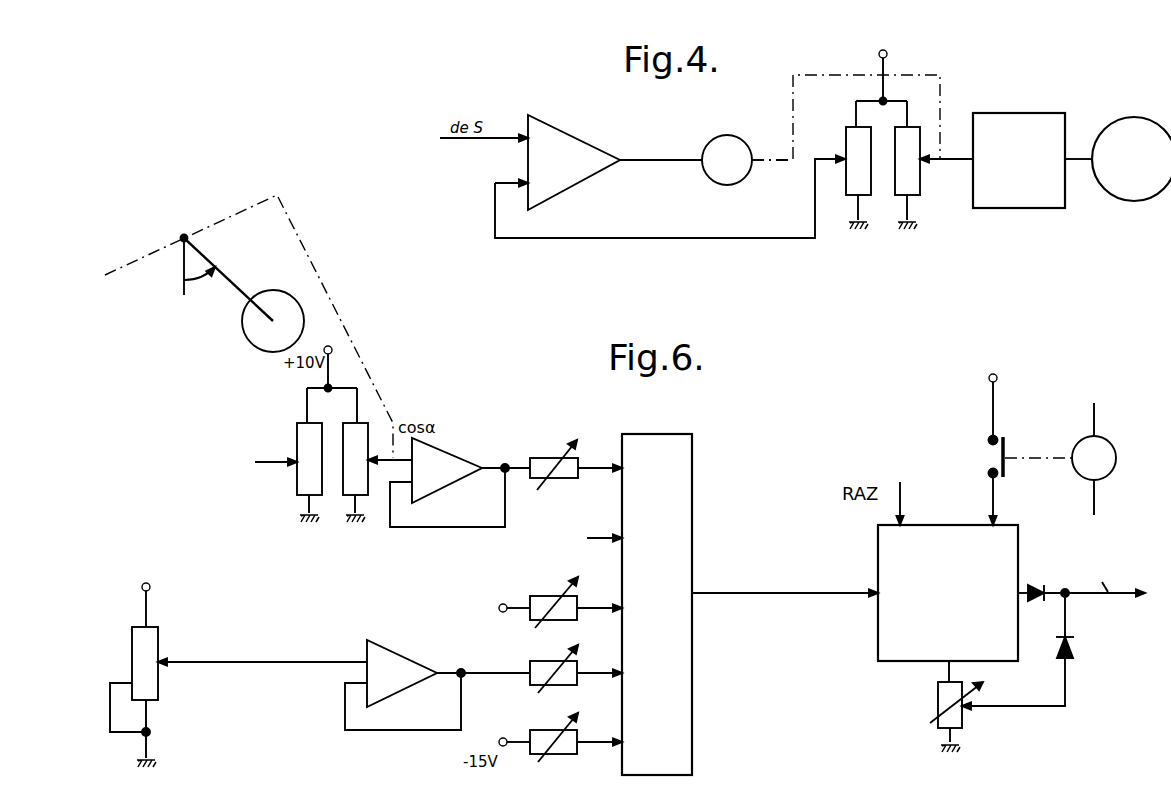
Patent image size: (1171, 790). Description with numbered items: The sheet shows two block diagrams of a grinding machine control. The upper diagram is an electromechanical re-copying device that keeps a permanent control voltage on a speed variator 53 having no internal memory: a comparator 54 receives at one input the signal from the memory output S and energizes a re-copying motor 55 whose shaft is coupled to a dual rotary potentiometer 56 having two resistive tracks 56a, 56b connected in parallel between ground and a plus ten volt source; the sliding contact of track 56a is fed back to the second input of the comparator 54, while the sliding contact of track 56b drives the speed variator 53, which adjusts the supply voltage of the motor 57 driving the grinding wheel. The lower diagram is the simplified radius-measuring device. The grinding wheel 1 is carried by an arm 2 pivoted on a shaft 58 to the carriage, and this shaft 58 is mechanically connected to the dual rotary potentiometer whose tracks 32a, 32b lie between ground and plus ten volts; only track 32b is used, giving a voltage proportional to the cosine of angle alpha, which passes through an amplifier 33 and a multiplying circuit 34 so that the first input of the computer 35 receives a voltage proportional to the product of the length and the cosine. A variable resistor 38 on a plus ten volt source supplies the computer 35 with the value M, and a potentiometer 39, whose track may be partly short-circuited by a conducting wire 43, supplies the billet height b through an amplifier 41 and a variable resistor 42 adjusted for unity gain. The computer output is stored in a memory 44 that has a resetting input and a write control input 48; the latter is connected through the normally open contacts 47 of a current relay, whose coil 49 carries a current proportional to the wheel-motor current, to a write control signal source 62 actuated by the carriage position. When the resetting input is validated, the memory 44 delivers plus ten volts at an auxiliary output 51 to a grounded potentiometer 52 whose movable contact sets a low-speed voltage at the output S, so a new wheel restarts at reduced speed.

In FIG. 6, the grinding wheel 1 is at (287, 302).
In FIG. 6, the arm 2 is at (235, 292).
In FIG. 6, the shaft 58 is at (184, 238).
In FIG. 6, the resistive track 32a is at (300, 483).
In FIG. 6, the resistive track 32b is at (363, 428).
In FIG. 6, the amplifier 33 is at (440, 482).
In FIG. 6, the multiplying circuit 34 is at (560, 479).
In FIG. 6, the computer 35 is at (690, 497).
In FIG. 6, the variable resistor 38 is at (567, 615).
In FIG. 6, the potentiometer 39 is at (137, 652).
In FIG. 6, the amplifier 41 is at (413, 668).
In FIG. 6, the variable resistor 42 is at (530, 662).
In FIG. 6, the conducting wire 43 is at (110, 712).
In FIG. 6, the memory 44 is at (886, 638).
In FIG. 6, the normally open contacts 47 is at (988, 453).
In FIG. 6, the write control input 48 is at (995, 502).
In FIG. 6, the coil 49 is at (1116, 462).
In FIG. 6, the auxiliary output 51 is at (947, 673).
In FIG. 6, the potentiometer 52 is at (956, 720).
In FIG. 6, the write control signal source 62 is at (988, 377).
In FIG. 4, the speed variator 53 is at (1012, 202).
In FIG. 4, the comparator 54 is at (573, 147).
In FIG. 4, the re-copying motor 55 is at (713, 148).
In FIG. 4, the dual rotary potentiometer 56 is at (883, 144).
In FIG. 4, the resistive track 56a is at (848, 150).
In FIG. 4, the resistive track 56b is at (915, 190).
In FIG. 4, the motor 57 is at (1120, 127).